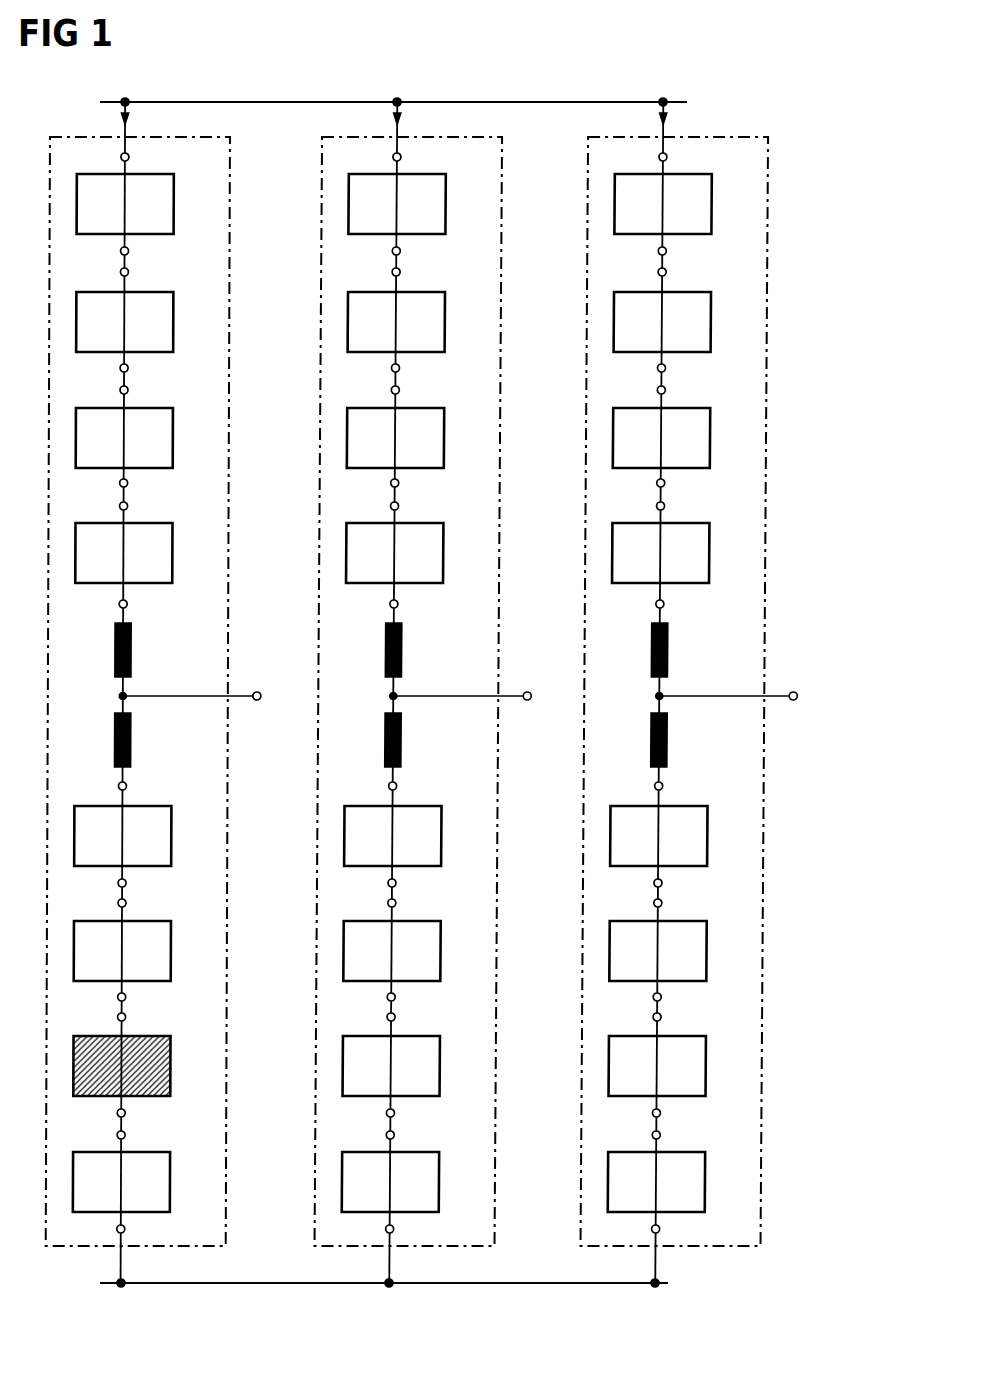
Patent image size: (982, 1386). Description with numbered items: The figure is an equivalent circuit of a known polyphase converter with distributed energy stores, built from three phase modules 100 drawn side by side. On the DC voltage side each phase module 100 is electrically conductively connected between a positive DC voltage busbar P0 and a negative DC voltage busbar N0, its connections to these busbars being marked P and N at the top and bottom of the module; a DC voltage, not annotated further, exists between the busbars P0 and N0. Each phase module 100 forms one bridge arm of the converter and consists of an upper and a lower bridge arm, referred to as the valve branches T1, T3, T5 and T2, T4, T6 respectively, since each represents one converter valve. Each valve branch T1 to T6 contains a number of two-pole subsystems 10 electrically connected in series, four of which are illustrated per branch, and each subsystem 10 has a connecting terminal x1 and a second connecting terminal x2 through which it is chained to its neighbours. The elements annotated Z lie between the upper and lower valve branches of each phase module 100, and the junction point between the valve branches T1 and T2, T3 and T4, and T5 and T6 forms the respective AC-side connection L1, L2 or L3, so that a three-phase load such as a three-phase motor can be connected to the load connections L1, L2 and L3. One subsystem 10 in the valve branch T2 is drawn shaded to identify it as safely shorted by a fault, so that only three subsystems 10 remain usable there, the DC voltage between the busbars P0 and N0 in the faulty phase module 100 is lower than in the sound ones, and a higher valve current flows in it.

The two-pole subsystem 10 is at (65, 1181).
The phase module 100 is at (105, 266).
The impedance / inductor Z is at (408, 695).
The connection on the AC voltage side L1 is at (203, 698).
The connection on the AC voltage side L2 is at (474, 698).
The connection on the AC voltage side L3 is at (740, 698).
The valve branch T1 is at (245, 379).
The valve branch T2 is at (241, 1013).
The valve branch T3 is at (516, 379).
The valve branch T4 is at (510, 1013).
The valve branch T5 is at (782, 379).
The valve branch T6 is at (776, 1013).
The positive DC terminal P is at (395, 84).
The negative DC terminal N is at (389, 1304).
The positive DC voltage busbar P0 is at (290, 102).
The negative DC voltage busbar N0 is at (246, 1283).
The connecting terminal x1 is at (371, 744).
The second connecting terminal x2 is at (394, 645).